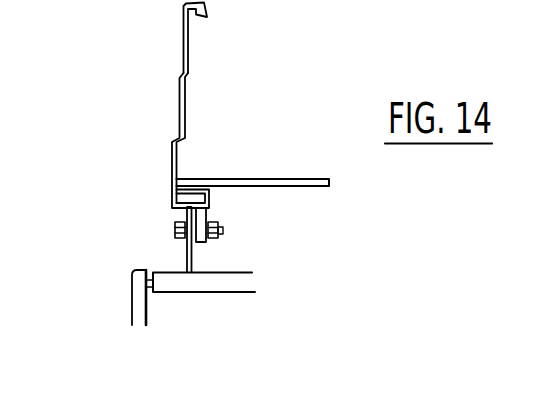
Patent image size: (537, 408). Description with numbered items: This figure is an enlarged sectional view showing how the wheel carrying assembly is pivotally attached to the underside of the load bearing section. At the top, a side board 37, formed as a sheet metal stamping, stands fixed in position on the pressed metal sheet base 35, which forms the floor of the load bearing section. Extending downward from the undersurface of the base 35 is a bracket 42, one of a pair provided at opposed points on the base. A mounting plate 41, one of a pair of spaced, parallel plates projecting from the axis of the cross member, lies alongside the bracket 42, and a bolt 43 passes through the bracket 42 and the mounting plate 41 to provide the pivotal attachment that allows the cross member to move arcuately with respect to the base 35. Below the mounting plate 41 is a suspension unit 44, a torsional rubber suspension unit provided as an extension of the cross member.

The base 35 is at (277, 178).
The side board 37 is at (183, 40).
The mounting plate 41 is at (186, 248).
The bracket 42 is at (181, 198).
The bolt 43 is at (223, 231).
The suspension unit 44 is at (231, 294).